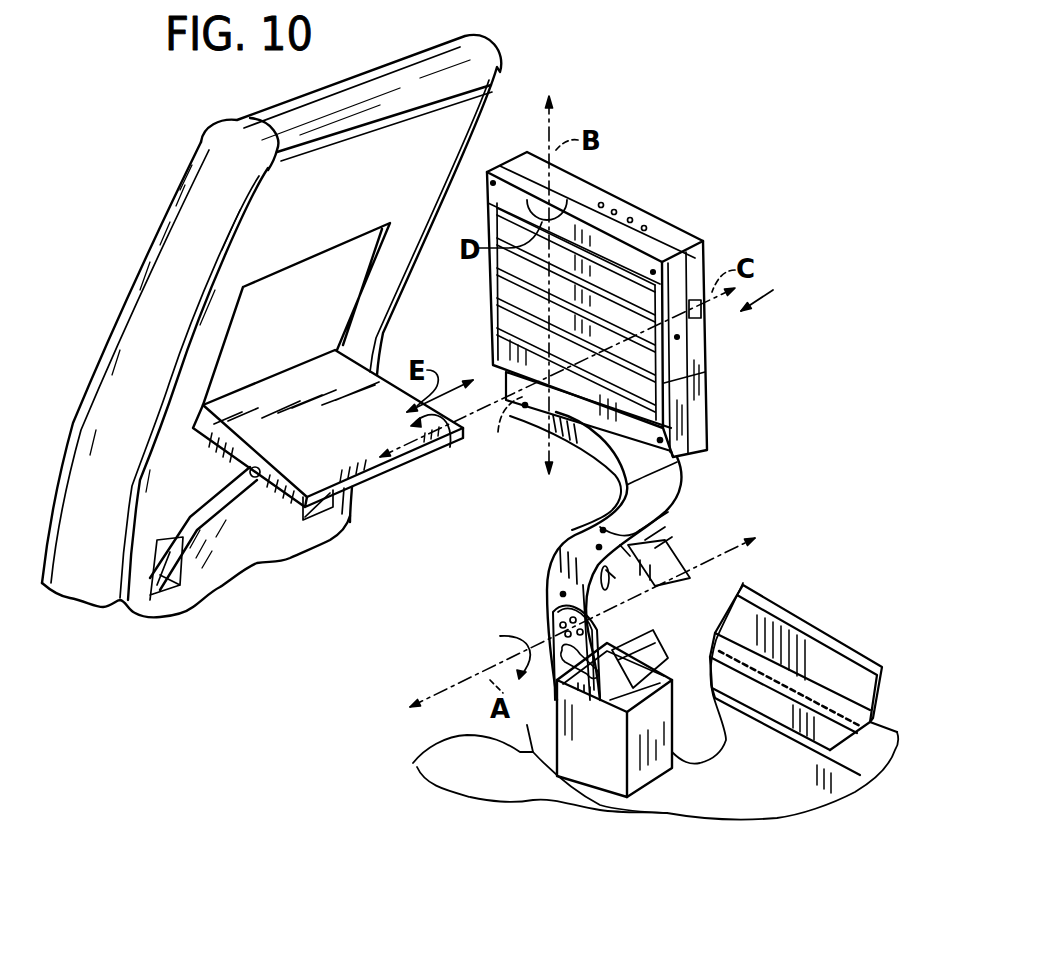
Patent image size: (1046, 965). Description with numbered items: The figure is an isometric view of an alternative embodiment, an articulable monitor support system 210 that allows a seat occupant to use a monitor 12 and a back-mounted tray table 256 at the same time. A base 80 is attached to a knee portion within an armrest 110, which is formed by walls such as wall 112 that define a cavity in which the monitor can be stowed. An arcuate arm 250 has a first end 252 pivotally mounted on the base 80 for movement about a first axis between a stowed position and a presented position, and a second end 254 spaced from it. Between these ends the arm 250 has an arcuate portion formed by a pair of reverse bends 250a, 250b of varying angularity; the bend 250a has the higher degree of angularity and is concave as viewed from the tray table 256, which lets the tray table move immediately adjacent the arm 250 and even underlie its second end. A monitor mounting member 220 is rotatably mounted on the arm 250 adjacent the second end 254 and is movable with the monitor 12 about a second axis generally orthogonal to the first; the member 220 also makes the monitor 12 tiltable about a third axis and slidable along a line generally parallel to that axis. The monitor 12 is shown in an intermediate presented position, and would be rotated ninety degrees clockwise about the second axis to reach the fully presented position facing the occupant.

The monitor 12 is at (667, 220).
The base 80 is at (607, 713).
The armrest 110 is at (760, 740).
The wall 112 is at (768, 705).
The articulable monitor support system 210 is at (783, 294).
The monitor mounting member 220 is at (707, 420).
The arcuate arm 250 is at (633, 556).
The bend 250a is at (690, 480).
The bend 250b is at (547, 548).
The first end 252 is at (640, 613).
The second end 254 is at (510, 406).
The tray table 256 is at (212, 392).